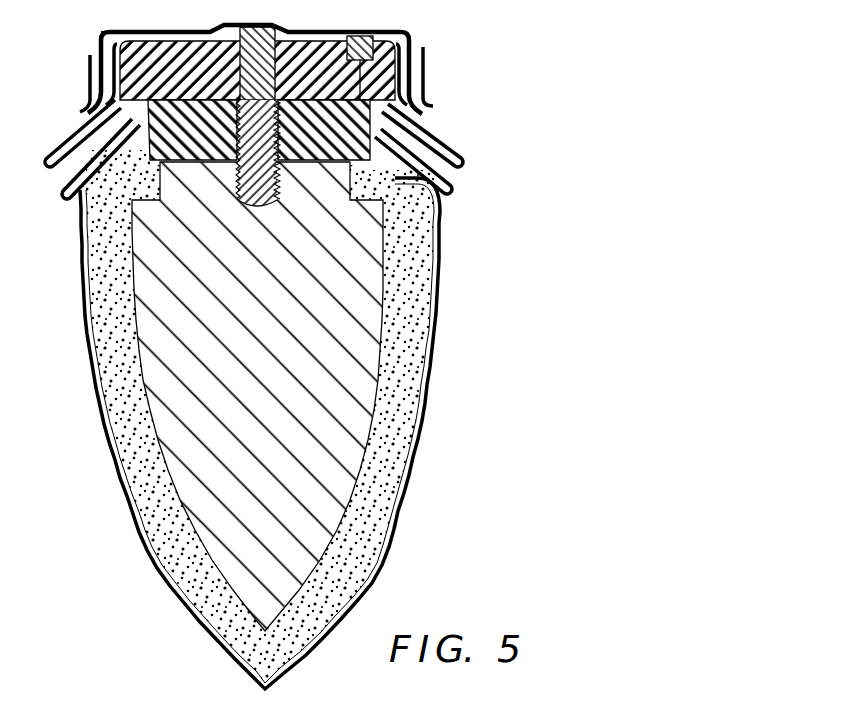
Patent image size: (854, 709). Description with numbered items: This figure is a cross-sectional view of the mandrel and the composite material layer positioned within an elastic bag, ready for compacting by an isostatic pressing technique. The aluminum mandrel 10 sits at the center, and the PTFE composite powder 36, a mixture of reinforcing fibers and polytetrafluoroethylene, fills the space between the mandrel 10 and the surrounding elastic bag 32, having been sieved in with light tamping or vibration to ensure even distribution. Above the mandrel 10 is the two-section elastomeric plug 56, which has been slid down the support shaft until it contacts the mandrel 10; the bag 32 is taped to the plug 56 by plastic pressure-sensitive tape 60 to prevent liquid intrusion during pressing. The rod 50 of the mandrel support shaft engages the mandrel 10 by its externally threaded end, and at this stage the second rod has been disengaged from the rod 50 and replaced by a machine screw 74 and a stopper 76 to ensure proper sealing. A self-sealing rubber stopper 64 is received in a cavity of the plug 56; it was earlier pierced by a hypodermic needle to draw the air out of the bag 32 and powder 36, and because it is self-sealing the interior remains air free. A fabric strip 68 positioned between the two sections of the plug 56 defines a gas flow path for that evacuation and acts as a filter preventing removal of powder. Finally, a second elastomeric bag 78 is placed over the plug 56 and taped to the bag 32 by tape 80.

The mandrel 10 is at (272, 397).
The elastic bag 32 is at (441, 251).
The PTFE composite powder 36 is at (420, 317).
The rod 50 is at (268, 150).
The elastomeric plug 56 is at (160, 48).
The pressure-sensitive tape 60 is at (403, 46).
The self-sealing rubber stopper 64 is at (369, 33).
The fabric strip 68 is at (440, 183).
The machine screw 74 is at (218, 34).
The stopper 76 is at (274, 27).
The second elastomeric bag 78 is at (334, 34).
The tape 80 is at (428, 95).